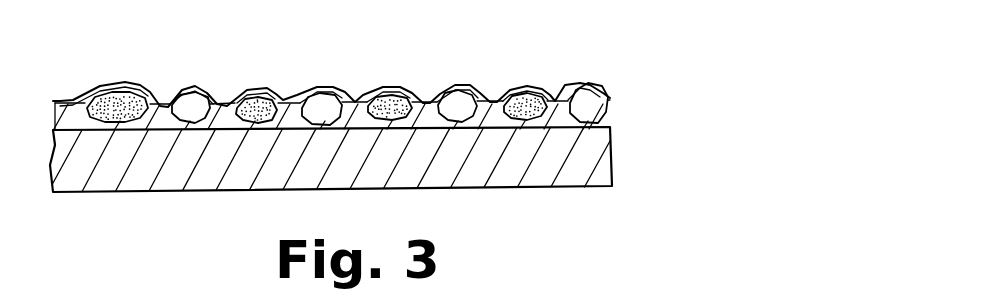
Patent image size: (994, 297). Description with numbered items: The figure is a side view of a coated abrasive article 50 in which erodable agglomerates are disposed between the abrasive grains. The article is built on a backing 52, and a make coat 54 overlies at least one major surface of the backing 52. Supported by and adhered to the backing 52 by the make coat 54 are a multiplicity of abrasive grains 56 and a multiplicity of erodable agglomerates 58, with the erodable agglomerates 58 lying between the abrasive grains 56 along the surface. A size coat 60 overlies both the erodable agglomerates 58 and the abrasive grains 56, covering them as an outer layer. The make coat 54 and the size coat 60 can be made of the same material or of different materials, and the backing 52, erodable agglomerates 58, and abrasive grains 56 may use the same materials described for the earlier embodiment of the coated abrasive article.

The coated abrasive article 50 is at (620, 133).
The backing 52 is at (587, 170).
The make coat 54 is at (613, 116).
The abrasive grains 56 is at (580, 100).
The erodable agglomerates 58 is at (360, 93).
The size coat 60 is at (617, 97).